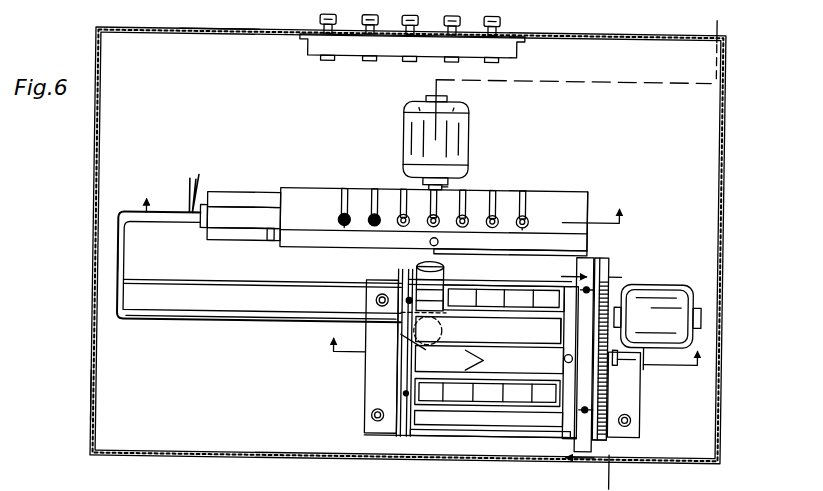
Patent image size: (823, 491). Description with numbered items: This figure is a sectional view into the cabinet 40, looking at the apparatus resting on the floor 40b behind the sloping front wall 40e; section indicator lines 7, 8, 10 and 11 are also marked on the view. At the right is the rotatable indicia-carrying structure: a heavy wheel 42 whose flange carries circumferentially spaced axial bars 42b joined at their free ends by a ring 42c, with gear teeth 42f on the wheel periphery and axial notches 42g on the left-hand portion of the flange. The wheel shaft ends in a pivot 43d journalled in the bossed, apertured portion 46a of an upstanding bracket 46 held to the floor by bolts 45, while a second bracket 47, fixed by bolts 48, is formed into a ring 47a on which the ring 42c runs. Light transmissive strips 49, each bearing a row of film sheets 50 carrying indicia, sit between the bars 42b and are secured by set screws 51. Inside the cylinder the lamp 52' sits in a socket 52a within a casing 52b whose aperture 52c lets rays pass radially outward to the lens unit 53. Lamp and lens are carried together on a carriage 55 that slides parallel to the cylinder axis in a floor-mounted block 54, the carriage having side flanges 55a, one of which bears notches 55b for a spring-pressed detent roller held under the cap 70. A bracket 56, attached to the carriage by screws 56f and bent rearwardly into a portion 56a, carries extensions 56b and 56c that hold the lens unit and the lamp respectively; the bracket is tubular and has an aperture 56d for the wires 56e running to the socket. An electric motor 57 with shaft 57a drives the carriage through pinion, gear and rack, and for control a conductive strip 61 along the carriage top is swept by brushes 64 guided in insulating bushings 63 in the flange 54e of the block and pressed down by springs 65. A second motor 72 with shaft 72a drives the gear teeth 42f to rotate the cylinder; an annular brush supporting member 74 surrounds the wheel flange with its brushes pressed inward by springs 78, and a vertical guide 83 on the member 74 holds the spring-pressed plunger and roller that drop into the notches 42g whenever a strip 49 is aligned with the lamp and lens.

The section line 7- 7 is at (716, 15).
The section line 8- 8 is at (514, 347).
The section line 10- 10 is at (387, 204).
The section line 11- 11 is at (568, 357).
The cabinet 40 is at (730, 138).
The front wall 40e is at (205, 27).
The floor 40b is at (96, 393).
The wheel 42 is at (612, 390).
The bars 42b is at (489, 360).
The ring 42c is at (412, 436).
The gear teeth 42f is at (614, 283).
The axial notches 42g is at (565, 318).
The pivot 43d is at (624, 362).
The bolts 45 is at (637, 423).
The upstanding bracket 46 is at (608, 442).
The bossed and apertured portion 46a is at (620, 365).
The second bracket 47 is at (372, 396).
The ring 47a is at (404, 368).
The bolts 48 is at (380, 300).
The strips 49 is at (510, 294).
The rectangular sheets 50 is at (485, 400).
The set screws 51 is at (409, 392).
The lamp 52' is at (489, 359).
The socket 52a is at (408, 338).
The casing 52b is at (448, 328).
The aperture 52c is at (412, 311).
The lens unit 53 is at (422, 270).
The block 54 is at (310, 186).
The flange 54e is at (594, 205).
The carriage 55 is at (232, 191).
The flanges 55a is at (248, 202).
The notches 55b is at (274, 240).
The bracket 56 is at (138, 222).
The rearwardly bent portion 56a is at (120, 258).
The extension 56b is at (268, 286).
The extension 56c is at (228, 325).
The aperture 56d is at (193, 210).
The electrical wires 56e is at (200, 172).
The screws 56f is at (204, 226).
The electric motor 57 is at (412, 140).
The shaft 57a is at (452, 181).
The electrical conductive strip 61 is at (448, 18).
The tubular electrical insulating element 63 is at (531, 224).
The electrical brush 64 is at (362, 228).
The spring 65 is at (378, 186).
The cap 70 is at (442, 242).
The electric motor 72 is at (670, 290).
The shaft 72a is at (632, 310).
The annular brush supporting member 74 is at (598, 262).
The springs 78 is at (590, 290).
The vertical guide member 83 is at (570, 355).